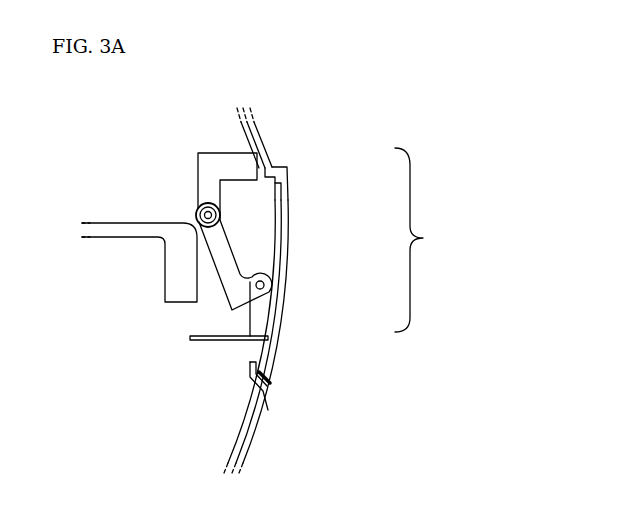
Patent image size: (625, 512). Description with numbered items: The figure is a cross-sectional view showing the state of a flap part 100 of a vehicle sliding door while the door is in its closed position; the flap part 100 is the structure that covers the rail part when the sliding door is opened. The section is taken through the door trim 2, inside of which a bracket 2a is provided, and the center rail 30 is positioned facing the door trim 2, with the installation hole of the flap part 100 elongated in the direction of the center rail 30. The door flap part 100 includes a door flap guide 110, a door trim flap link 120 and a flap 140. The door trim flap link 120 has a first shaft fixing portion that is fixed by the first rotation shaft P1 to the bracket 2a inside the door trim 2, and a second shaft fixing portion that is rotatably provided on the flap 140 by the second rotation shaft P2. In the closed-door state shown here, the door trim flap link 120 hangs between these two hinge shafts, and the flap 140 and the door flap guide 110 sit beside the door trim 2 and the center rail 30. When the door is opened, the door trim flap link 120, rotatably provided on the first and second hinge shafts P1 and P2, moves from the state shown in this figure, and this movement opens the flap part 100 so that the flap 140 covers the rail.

The door trim 2 is at (258, 126).
The bracket 2a is at (242, 168).
The first rotation shaft P1 is at (220, 212).
The door trim flap link 120 is at (223, 258).
The second rotation shaft P2 is at (268, 282).
The door flap guide 110 is at (230, 335).
The flap 140 is at (278, 343).
The center rail 30 is at (183, 268).
The door flap part 100 is at (429, 240).